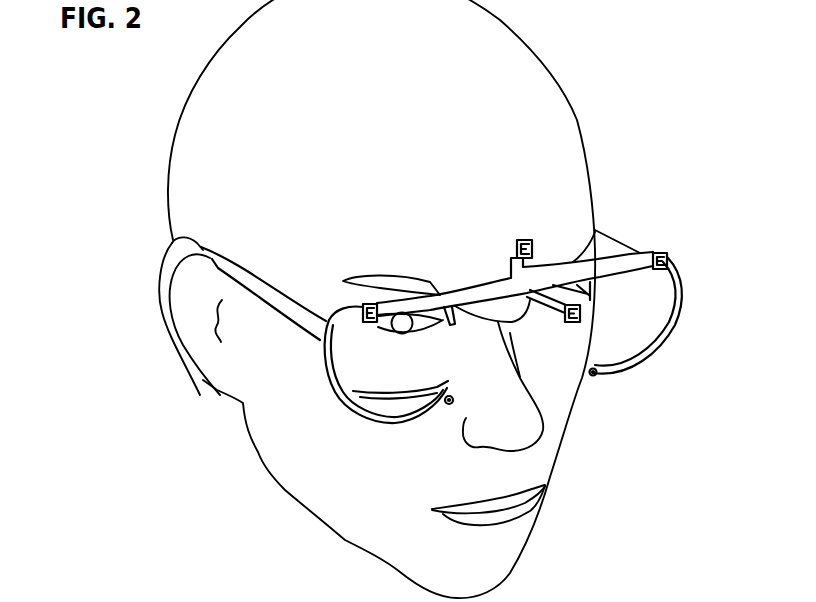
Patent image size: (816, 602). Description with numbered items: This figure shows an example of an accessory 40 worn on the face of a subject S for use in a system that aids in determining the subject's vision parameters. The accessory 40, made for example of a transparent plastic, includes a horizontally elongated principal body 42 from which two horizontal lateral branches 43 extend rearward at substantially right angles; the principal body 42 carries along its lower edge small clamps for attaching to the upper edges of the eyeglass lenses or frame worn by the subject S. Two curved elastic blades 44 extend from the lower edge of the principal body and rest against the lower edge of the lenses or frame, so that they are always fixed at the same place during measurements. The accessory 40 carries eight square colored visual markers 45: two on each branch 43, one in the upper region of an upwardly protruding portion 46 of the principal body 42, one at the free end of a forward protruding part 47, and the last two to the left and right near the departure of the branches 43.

The subject S is at (213, 98).
The accessory 40 is at (436, 331).
The principal body 42 is at (428, 298).
The lateral branches 43 is at (257, 285).
The elastic blades 44 is at (373, 419).
The visual markers 45 is at (375, 317).
The upwardly protruding portion 46 is at (540, 263).
The forward protruding part 47 is at (541, 304).